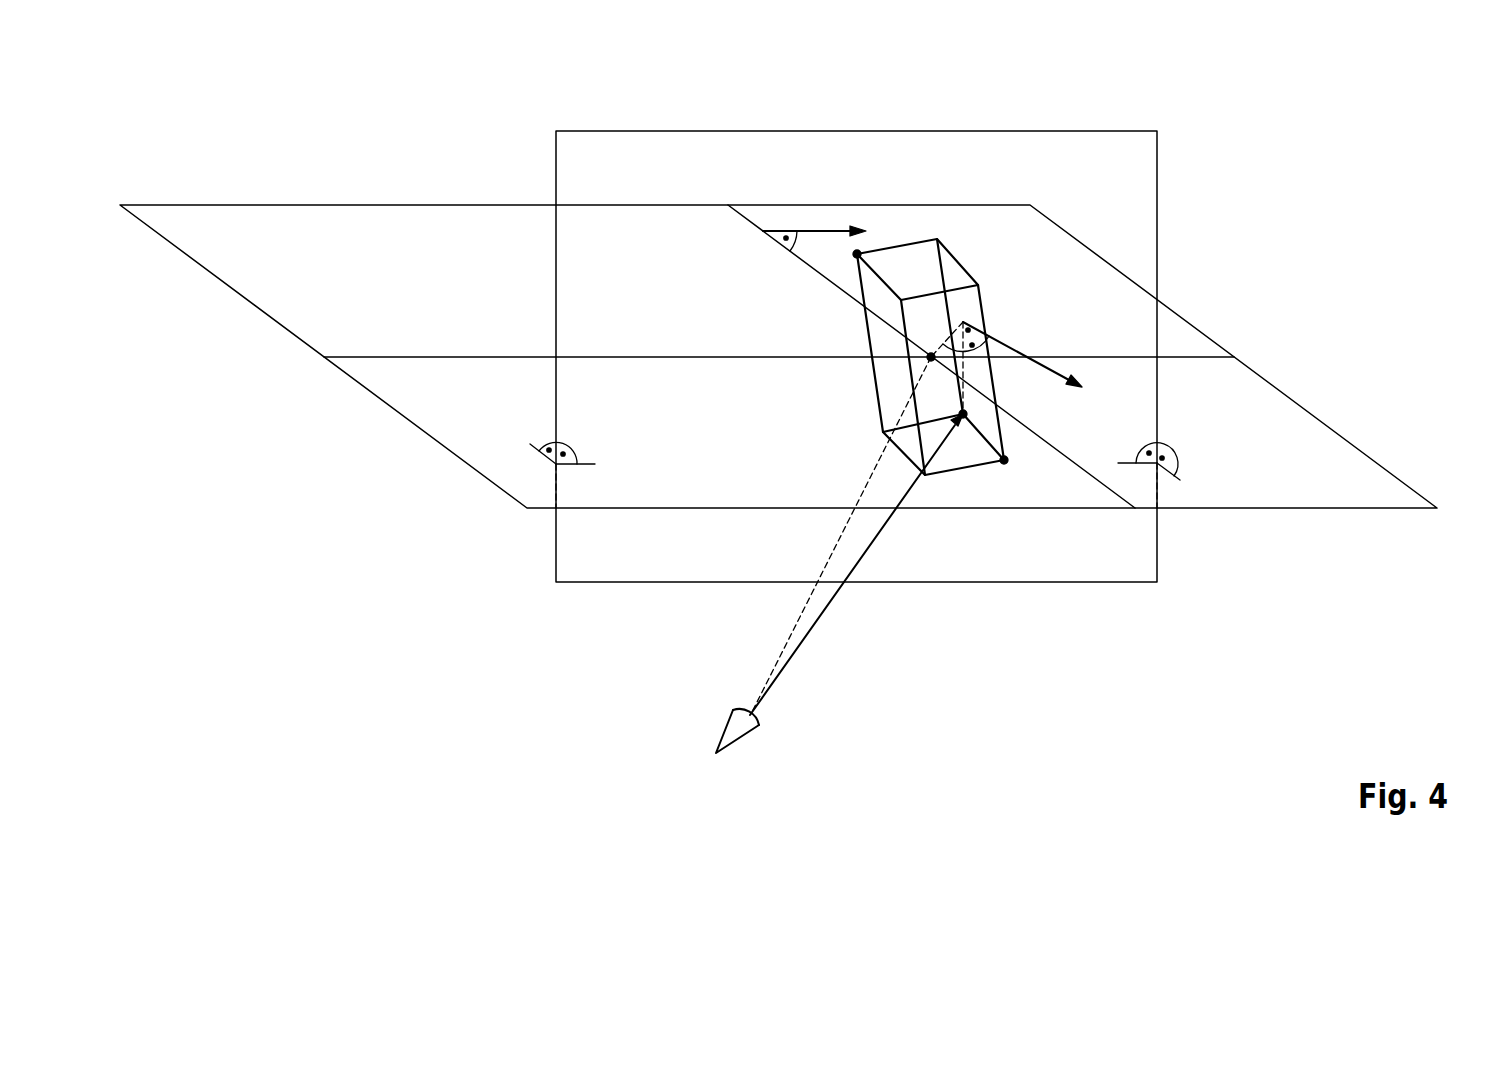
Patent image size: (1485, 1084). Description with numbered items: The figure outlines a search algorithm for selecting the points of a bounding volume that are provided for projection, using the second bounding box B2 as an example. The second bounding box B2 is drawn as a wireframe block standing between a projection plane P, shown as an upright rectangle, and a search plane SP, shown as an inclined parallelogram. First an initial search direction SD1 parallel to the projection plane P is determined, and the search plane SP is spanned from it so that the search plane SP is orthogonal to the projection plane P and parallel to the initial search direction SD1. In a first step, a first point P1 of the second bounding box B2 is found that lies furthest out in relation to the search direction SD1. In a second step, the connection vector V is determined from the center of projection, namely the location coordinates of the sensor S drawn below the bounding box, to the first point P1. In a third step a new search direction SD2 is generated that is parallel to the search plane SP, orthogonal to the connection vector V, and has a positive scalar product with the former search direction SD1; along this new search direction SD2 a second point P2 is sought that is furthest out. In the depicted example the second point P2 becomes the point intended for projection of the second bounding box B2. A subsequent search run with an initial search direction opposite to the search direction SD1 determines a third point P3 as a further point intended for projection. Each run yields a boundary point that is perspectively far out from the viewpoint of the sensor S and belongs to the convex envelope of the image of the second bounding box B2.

The projection plane P is at (1058, 130).
The search plane SP is at (1335, 433).
The second bounding box B2 is at (897, 246).
The first point P1 is at (963, 414).
The second point P2 is at (1004, 460).
The third point P3 is at (857, 254).
The initial search direction SD1 is at (822, 230).
The new search direction SD2 is at (1005, 346).
The connection vector V is at (797, 652).
The sensor S is at (735, 735).